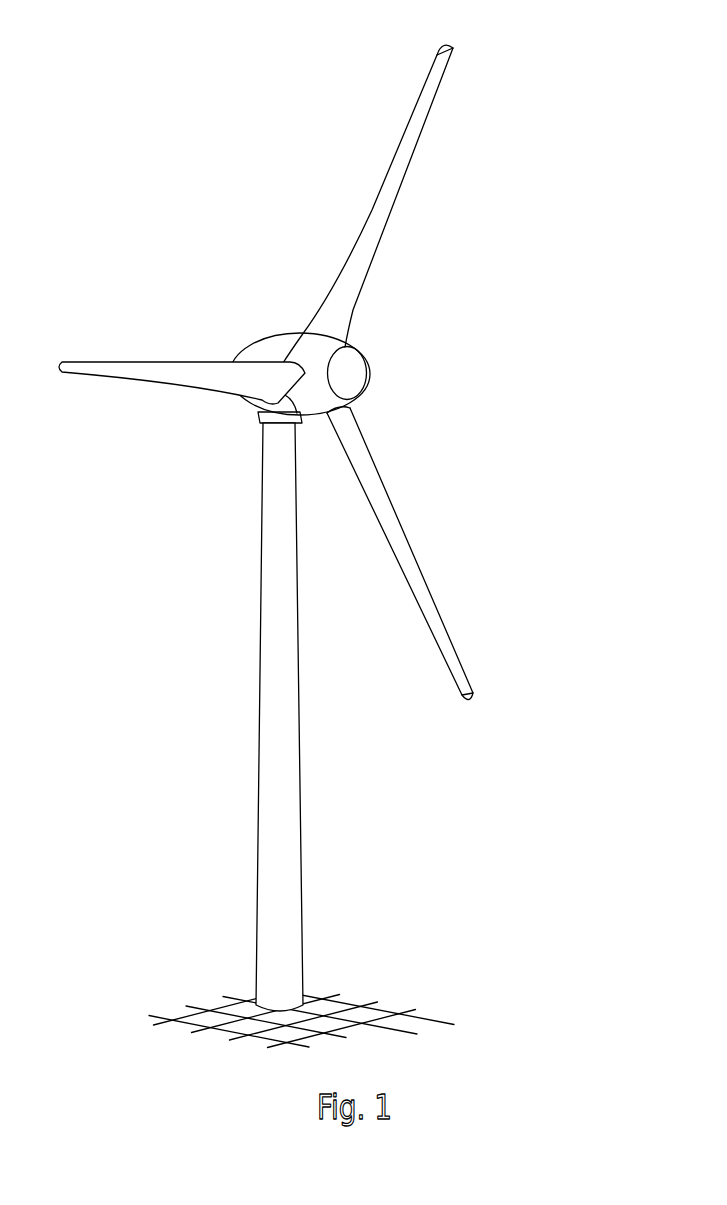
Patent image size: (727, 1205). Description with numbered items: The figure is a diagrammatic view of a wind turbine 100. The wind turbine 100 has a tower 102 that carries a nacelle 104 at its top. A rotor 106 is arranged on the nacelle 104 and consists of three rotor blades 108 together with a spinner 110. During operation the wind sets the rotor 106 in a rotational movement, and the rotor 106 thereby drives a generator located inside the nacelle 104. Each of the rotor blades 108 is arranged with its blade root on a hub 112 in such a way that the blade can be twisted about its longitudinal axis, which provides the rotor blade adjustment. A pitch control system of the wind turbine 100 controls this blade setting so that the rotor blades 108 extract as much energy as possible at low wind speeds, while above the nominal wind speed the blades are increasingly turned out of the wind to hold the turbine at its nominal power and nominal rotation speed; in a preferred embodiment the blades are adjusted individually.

The wind turbine 100 is at (309, 528).
The tower 102 is at (286, 804).
The nacelle 104 is at (273, 350).
The rotor 106 is at (309, 372).
The rotor blades 108 is at (405, 158).
The spinner 110 is at (352, 373).
The hub 112 is at (316, 398).